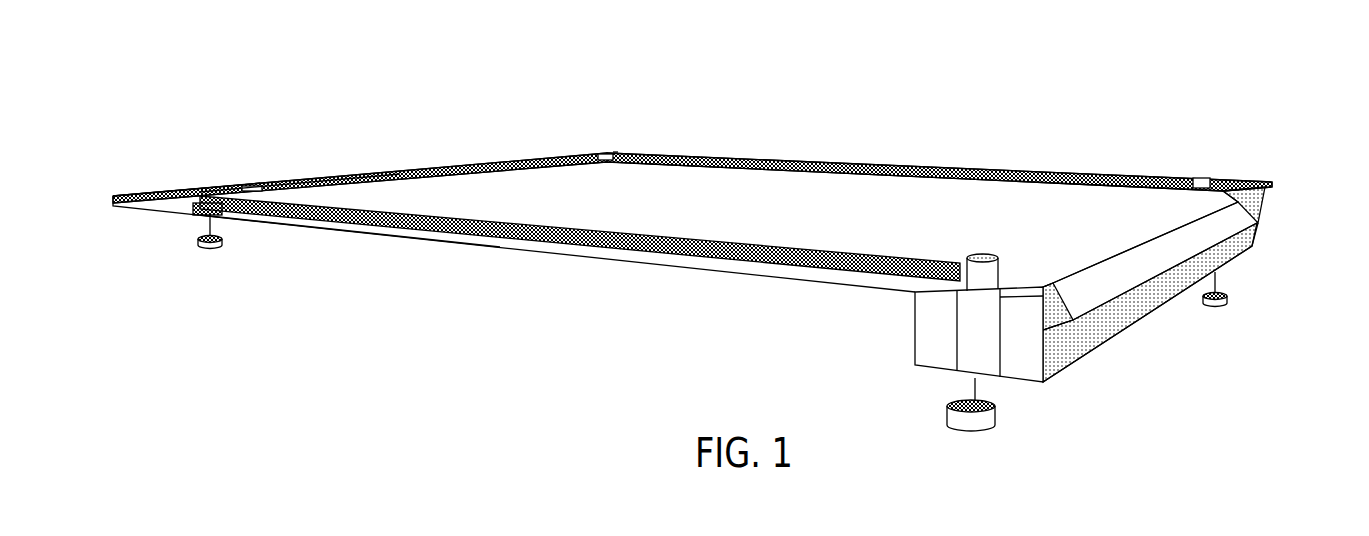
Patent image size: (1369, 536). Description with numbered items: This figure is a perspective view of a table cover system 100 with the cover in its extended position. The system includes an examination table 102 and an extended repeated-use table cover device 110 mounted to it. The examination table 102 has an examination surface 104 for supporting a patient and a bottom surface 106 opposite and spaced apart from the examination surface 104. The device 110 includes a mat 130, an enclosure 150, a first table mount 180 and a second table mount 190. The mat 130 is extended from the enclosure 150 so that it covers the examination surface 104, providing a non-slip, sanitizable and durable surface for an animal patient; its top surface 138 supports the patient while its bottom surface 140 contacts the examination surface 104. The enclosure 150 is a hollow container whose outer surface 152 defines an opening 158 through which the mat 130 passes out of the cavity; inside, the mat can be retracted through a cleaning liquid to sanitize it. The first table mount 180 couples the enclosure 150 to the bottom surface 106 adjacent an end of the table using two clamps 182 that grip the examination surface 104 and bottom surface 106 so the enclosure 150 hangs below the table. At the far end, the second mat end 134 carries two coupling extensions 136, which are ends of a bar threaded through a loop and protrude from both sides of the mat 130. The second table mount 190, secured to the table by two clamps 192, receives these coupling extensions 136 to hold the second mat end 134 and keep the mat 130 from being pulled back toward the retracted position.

The table cover system 100 is at (1115, 91).
The examination table 102 is at (272, 180).
The examination surface 104 is at (230, 189).
The bottom surface 106 is at (333, 240).
The extended repeated-use table cover device 110 is at (1263, 226).
The mat 130 is at (910, 193).
The second mat end 134 is at (428, 168).
The coupling extensions 136 is at (252, 186).
The top surface 138 is at (732, 192).
The bottom surface 140 is at (588, 237).
The enclosure 150 is at (1242, 254).
The outer surface 152 is at (1140, 307).
The opening 158 is at (1072, 318).
The first table mount 180 is at (1203, 173).
The clamps 182 is at (1230, 305).
The second table mount 190 is at (233, 188).
The clamps 192 is at (218, 250).